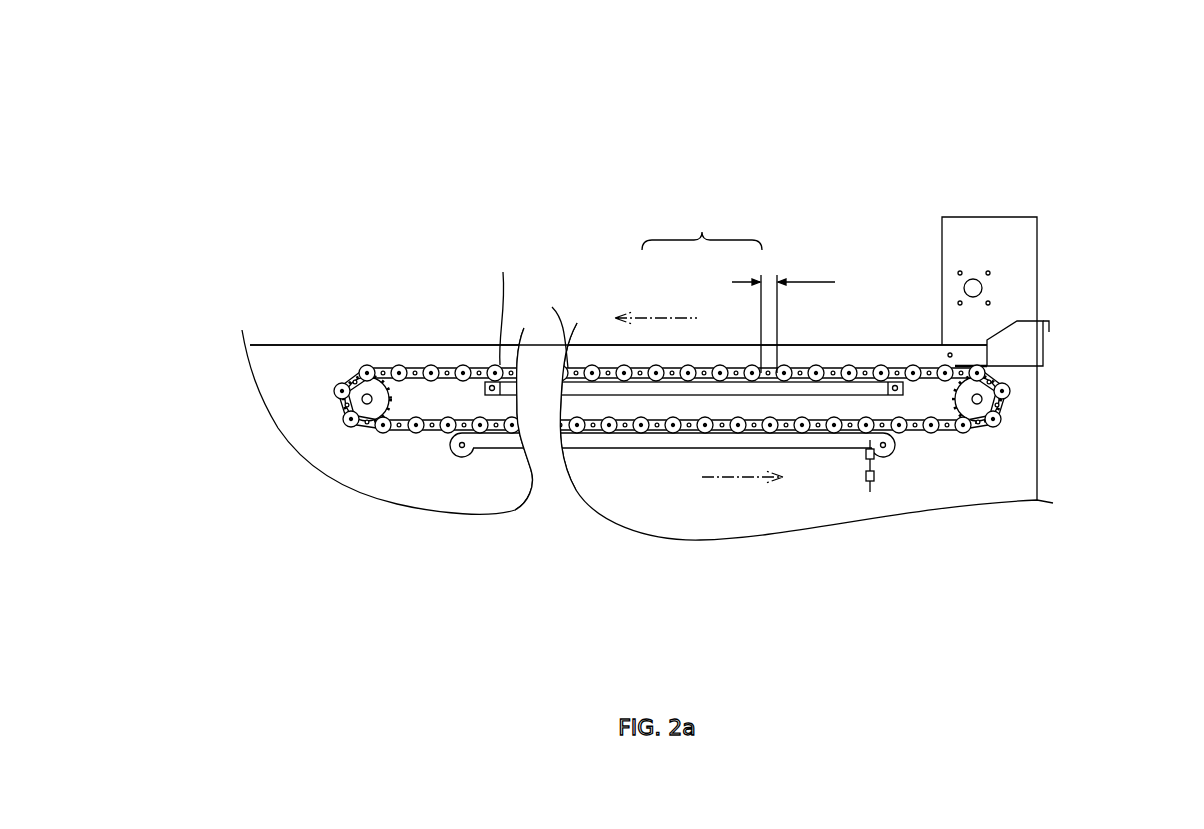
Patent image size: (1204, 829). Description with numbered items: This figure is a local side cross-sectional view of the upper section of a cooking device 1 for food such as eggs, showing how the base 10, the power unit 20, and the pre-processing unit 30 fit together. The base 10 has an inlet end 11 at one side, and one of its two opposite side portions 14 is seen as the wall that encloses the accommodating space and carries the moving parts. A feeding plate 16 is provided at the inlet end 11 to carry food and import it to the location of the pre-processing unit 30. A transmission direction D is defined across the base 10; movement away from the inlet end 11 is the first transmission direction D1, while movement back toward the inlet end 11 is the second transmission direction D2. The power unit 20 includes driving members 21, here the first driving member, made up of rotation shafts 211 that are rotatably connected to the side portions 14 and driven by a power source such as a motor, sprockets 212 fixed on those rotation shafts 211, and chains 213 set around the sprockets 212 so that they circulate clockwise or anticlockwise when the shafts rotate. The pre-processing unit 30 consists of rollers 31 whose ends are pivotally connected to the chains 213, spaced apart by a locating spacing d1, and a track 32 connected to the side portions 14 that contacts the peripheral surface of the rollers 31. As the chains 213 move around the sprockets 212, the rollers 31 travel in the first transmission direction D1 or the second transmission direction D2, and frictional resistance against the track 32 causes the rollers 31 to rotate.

The cooking device 1 is at (1110, 90).
The base 10 is at (240, 305).
The inlet end 11 is at (1013, 300).
The side portions 14 is at (500, 365).
The feeding plate 16 is at (1007, 340).
The power unit 20 is at (631, 378).
The driving members 21 is at (663, 404).
The rotation shafts 211 is at (367, 398).
The sprockets 212 is at (340, 392).
The chains 213 is at (452, 368).
The pre-processing unit 30 is at (612, 350).
The rollers 31 is at (568, 368).
The track 32 is at (813, 443).
The transmission direction D is at (702, 227).
The first transmission direction D1 is at (657, 318).
The second transmission direction D2 is at (743, 475).
The locating spacing d1 is at (783, 312).